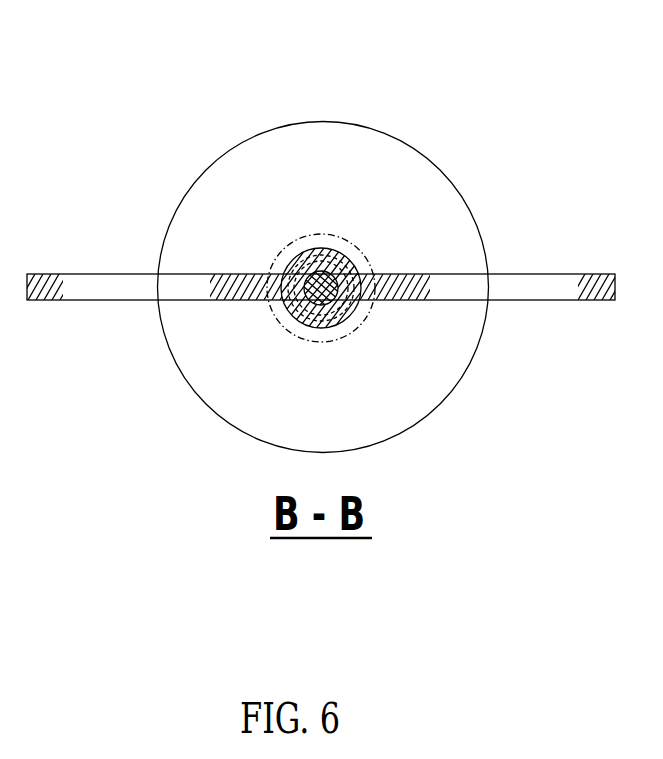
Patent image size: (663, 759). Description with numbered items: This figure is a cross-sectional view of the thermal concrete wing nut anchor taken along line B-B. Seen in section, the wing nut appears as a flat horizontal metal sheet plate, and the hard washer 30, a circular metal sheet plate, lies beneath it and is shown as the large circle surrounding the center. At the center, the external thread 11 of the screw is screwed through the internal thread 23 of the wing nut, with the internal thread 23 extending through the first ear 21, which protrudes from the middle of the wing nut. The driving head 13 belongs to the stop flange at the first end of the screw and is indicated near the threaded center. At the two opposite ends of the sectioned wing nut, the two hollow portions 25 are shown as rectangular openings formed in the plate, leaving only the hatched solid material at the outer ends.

The hard washer 30 is at (322, 134).
The hollow portion 25 is at (100, 285).
The driving head 13 is at (347, 263).
The internal thread 23 is at (302, 299).
The external thread 11 is at (320, 288).
The first ear 21 is at (320, 288).